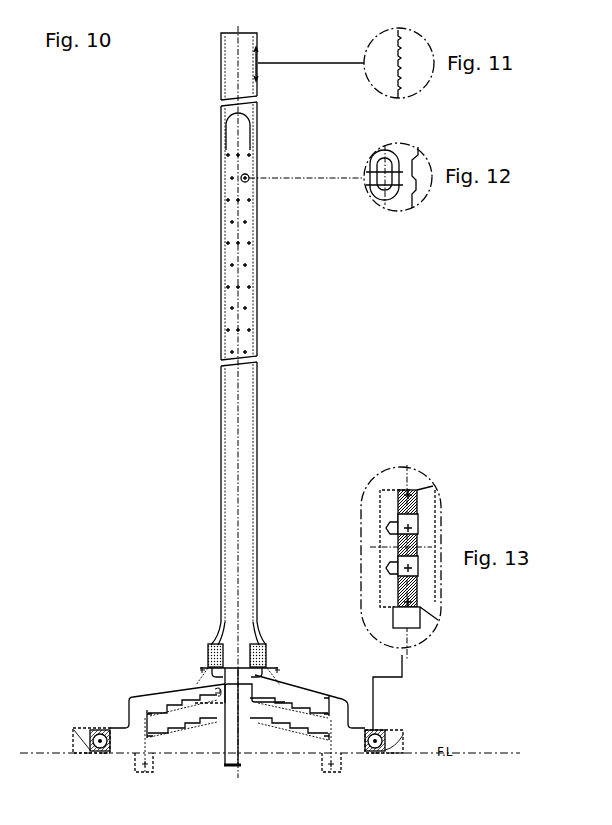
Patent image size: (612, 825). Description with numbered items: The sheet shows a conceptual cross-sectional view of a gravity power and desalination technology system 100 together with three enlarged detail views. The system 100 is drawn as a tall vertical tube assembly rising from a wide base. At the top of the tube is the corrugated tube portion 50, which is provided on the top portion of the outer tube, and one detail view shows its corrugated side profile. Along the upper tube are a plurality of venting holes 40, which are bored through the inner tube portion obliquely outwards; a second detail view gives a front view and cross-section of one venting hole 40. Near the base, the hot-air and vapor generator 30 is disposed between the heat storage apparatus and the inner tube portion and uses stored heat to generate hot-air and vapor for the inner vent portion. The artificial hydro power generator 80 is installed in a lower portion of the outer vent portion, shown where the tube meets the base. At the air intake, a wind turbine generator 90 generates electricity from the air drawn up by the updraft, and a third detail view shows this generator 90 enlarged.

In FIG. 10, the gravity power and desalination technology system 100 is at (129, 99).
In FIG. 11, the corrugated tube portion 50 is at (372, 45).
In FIG. 12, the venting hole 40 is at (398, 211).
In FIG. 10, the artificial hydro power generator 80 is at (210, 647).
In FIG. 10, the hot-air and vapor generator 30 is at (165, 732).
In FIG. 10, the wind turbine generator 90 is at (100, 733).
In FIG. 13, the wind turbine generator 90 is at (404, 465).